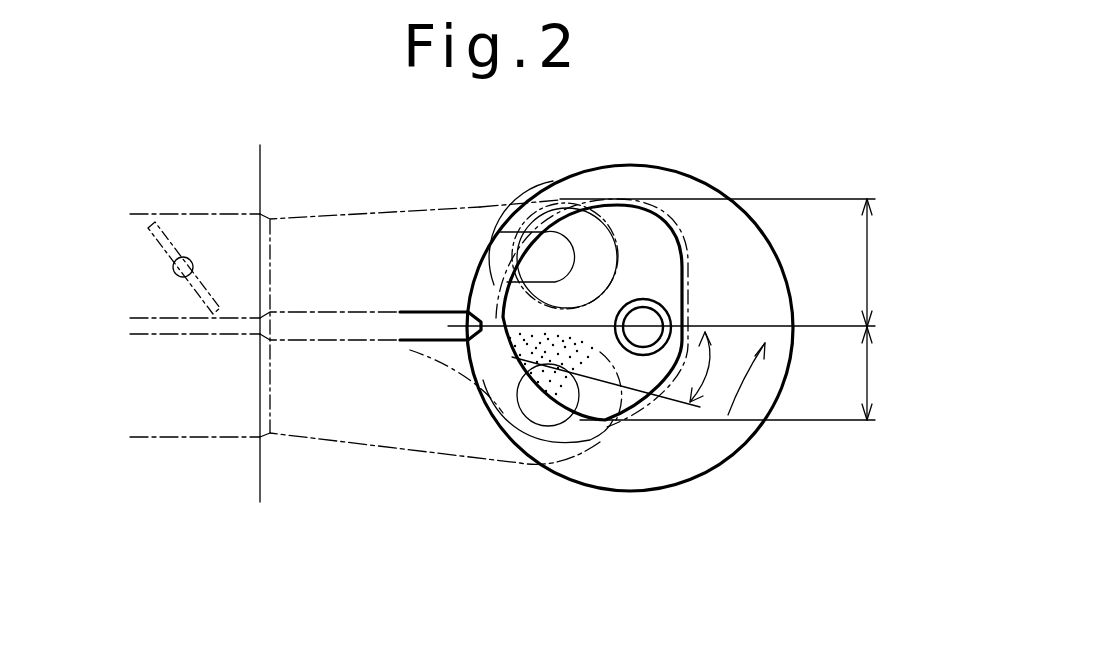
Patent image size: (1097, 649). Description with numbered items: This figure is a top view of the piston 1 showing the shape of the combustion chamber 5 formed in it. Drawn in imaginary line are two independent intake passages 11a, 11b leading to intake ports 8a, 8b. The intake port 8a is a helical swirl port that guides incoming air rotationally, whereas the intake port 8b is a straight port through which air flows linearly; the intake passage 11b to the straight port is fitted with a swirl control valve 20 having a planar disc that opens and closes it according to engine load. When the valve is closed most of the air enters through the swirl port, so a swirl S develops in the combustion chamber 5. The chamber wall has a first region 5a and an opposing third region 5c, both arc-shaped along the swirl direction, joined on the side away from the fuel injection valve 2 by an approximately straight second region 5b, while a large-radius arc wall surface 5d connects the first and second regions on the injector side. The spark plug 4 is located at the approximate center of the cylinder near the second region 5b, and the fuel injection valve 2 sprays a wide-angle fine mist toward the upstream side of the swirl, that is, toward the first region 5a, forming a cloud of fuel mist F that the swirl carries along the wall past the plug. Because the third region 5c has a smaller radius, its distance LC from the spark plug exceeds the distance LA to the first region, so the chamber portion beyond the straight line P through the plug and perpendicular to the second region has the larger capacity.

The piston 1 is at (703, 447).
The fuel injection valve 2 is at (462, 341).
The spark plug 4 is at (653, 353).
The combustion chamber 5 is at (557, 317).
The first region of the wall surface 5a is at (633, 380).
The second region of the wall surface 5b is at (683, 293).
The third region of the wall surface 5c is at (663, 225).
The wall surface 5d is at (465, 342).
The intake port 8a is at (487, 433).
The intake port 8b is at (538, 203).
The intake passage 11a is at (228, 420).
The intake passage 11b is at (220, 240).
The swirl control valve 20 is at (155, 228).
The cloud of fuel mist F is at (548, 372).
The swirl S is at (774, 426).
The straight line P is at (880, 327).
The distance between third wall surface region and spark plug LC is at (717, 263).
The distance between first wall surface region and spark plug LA is at (727, 373).